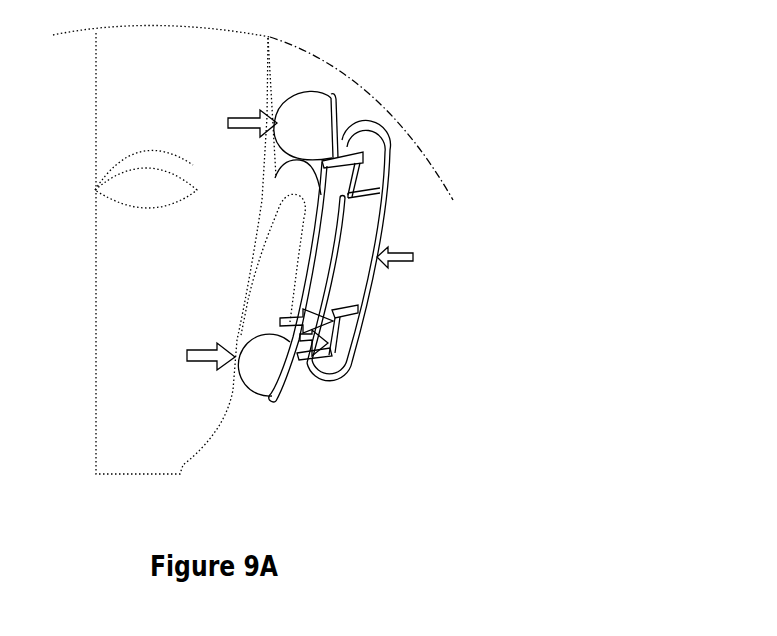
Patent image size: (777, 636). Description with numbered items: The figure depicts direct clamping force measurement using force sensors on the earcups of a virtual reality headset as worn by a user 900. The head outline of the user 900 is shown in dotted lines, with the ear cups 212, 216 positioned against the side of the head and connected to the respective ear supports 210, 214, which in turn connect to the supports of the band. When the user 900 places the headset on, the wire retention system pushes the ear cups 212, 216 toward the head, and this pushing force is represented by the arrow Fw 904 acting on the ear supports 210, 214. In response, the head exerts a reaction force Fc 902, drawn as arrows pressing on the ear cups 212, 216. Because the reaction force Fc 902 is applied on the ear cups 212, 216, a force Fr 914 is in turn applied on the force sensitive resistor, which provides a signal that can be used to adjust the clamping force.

The user 900 is at (115, 118).
The head exerting reaction force Fc 902 is at (147, 397).
The force Fw of the wire retention system 904 is at (468, 294).
The force Fr 914 is at (327, 380).
The right ear cup 212 is at (339, 105).
The left ear cup 216 is at (327, 97).
The right ear support 210 is at (383, 236).
The left ear support 214 is at (383, 137).